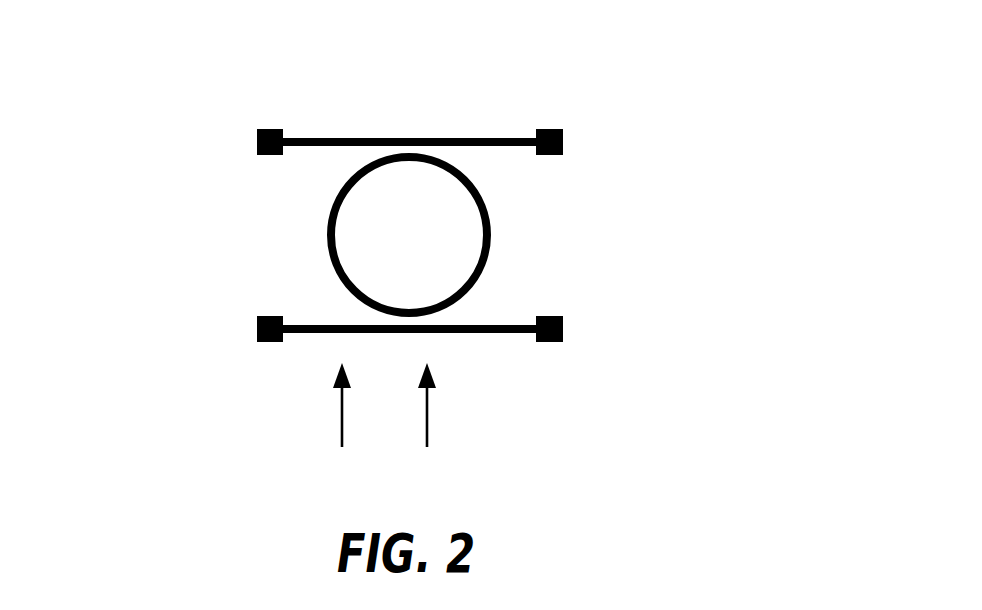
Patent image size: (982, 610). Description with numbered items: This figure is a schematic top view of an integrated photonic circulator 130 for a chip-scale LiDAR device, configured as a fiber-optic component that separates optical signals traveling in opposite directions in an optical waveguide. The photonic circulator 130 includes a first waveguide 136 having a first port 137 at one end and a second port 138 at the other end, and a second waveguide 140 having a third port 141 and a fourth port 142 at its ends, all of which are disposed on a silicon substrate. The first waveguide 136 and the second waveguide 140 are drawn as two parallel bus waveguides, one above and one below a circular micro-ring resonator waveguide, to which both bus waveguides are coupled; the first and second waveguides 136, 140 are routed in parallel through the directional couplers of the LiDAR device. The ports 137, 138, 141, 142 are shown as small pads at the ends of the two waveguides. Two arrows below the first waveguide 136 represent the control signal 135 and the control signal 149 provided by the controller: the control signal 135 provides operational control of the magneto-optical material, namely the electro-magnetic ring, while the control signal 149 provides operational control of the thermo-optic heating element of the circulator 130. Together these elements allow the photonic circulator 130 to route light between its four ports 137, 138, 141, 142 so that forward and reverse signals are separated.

The integrated photonic circulator 130 is at (154, 113).
The control signal 135 is at (360, 478).
The first waveguide 136 is at (481, 350).
The first port 137 is at (267, 342).
The second port 138 is at (563, 333).
The second waveguide 140 is at (468, 121).
The third port 141 is at (555, 129).
The fourth port 142 is at (270, 129).
The control signal 149 is at (445, 478).